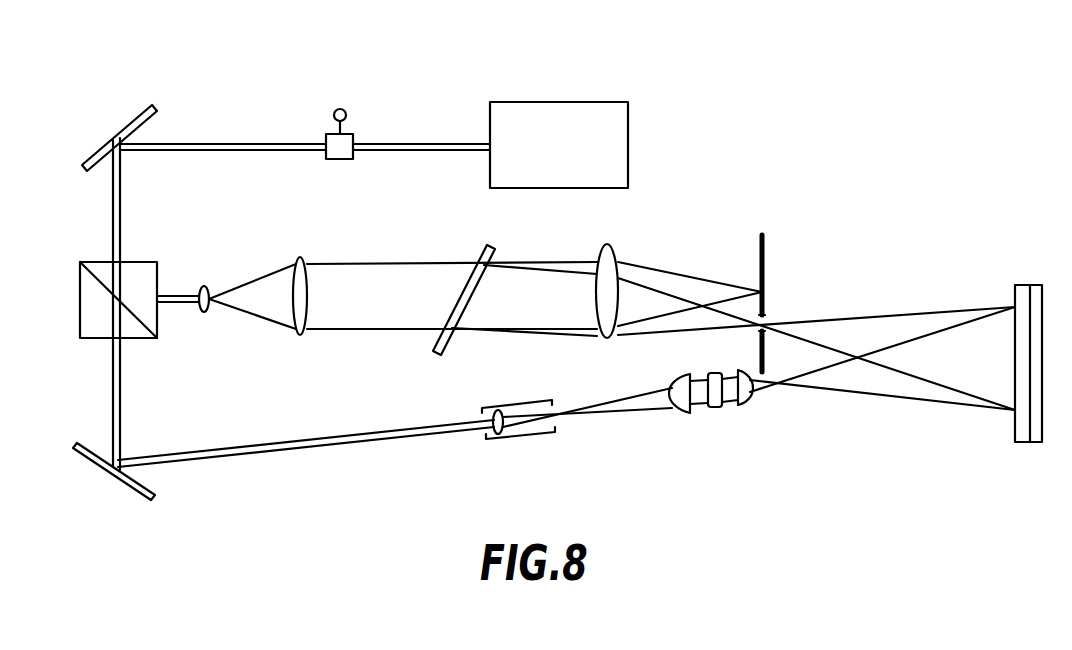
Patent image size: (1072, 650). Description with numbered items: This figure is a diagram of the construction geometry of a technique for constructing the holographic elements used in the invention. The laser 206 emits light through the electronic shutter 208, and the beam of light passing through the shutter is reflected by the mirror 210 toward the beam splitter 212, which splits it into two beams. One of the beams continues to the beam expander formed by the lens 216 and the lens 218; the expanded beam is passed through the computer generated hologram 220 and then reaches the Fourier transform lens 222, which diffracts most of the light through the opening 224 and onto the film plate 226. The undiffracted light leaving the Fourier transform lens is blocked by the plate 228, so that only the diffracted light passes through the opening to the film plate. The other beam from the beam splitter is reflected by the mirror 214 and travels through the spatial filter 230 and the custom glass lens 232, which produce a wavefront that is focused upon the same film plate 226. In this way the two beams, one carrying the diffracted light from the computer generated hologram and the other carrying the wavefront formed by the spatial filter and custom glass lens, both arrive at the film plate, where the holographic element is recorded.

The laser 206 is at (630, 110).
The electronic shutter 208 is at (355, 133).
The mirror 210 is at (131, 119).
The beam splitter 212 is at (157, 278).
The mirror 214 is at (78, 442).
The lens 216 is at (210, 285).
The lens 218 is at (300, 253).
The computer generated hologram 220 is at (476, 252).
The Fourier transform lens 222 is at (610, 243).
The opening 224 is at (768, 318).
The film plate 226 is at (1035, 285).
The plate 228 is at (767, 260).
The spatial filter 230 is at (525, 372).
The custom glass lens 232 is at (733, 424).